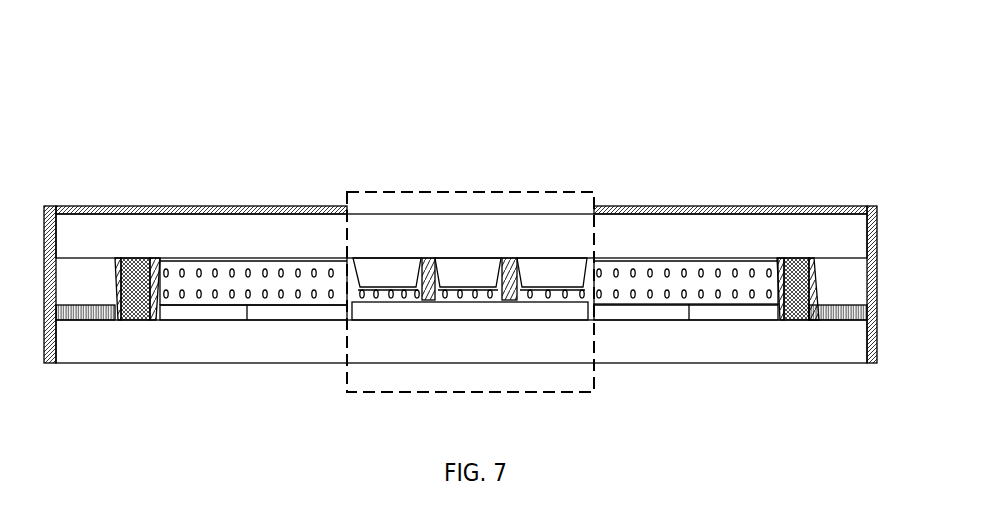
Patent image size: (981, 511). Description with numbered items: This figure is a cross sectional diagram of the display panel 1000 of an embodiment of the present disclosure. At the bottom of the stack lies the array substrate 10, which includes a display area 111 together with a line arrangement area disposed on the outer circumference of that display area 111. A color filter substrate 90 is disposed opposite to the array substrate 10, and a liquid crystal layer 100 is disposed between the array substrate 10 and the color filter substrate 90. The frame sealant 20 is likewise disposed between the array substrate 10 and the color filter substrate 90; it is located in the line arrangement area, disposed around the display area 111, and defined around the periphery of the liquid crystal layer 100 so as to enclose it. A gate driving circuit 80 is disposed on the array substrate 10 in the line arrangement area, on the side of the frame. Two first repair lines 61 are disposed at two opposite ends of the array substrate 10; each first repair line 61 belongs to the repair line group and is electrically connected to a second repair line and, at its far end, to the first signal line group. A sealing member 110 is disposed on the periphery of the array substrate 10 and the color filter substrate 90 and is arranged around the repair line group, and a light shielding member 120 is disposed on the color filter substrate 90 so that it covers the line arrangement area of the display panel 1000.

The display panel 1000 is at (507, 37).
The sealing member 110 is at (875, 263).
The light shielding member 120 is at (817, 207).
The color filter substrate 90 is at (657, 233).
The array substrate 10 is at (738, 352).
The liquid crystal layer 100 is at (707, 285).
The gate driving circuit 80 is at (290, 315).
The frame sealant 20 is at (150, 320).
The first repair line 61 is at (90, 315).
The display area 111 is at (545, 200).